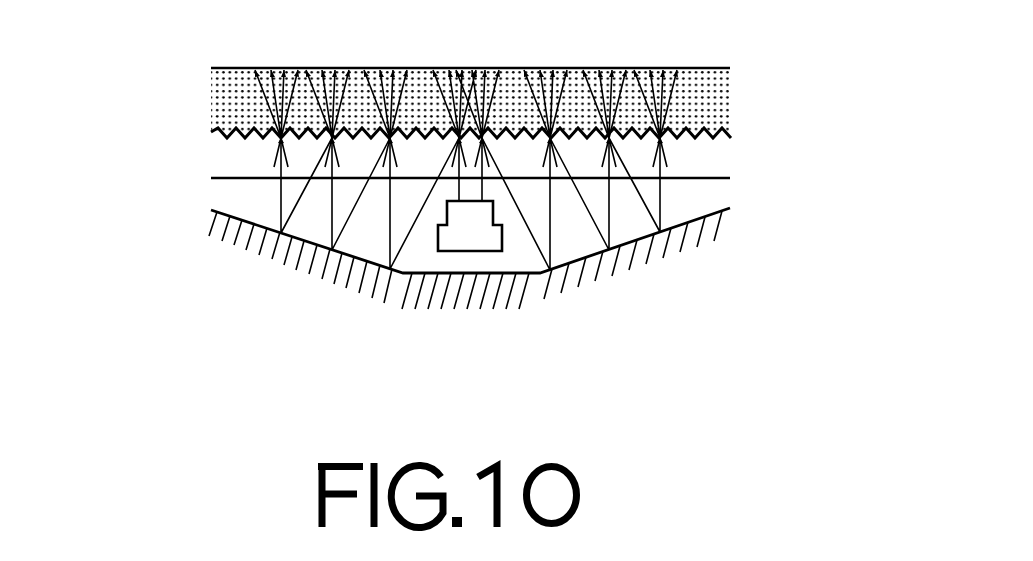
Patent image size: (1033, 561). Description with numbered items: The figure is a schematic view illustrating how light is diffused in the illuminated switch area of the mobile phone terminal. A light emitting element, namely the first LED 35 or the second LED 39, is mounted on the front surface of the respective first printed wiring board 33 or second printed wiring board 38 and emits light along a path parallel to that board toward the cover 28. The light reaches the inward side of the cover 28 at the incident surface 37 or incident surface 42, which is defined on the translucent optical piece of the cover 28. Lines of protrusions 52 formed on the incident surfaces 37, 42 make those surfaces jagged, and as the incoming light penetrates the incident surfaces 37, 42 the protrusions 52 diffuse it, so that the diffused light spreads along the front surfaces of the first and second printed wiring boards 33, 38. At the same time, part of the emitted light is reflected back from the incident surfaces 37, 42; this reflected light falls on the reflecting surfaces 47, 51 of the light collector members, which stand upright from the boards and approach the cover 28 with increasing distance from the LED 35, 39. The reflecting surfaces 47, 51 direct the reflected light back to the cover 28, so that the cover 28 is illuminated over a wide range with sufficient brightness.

The cover 28 is at (712, 68).
The incident surface 37 is at (378, 113).
The incident surface 42 is at (248, 137).
The protrusions 52 is at (692, 131).
The first printed wiring board 33 is at (377, 184).
The second printed wiring board 38 is at (232, 178).
The reflecting surface 47 is at (554, 230).
The reflecting surface 51 is at (705, 207).
The first light-emitting diode 35 is at (398, 290).
The second light-emitting diode 39 is at (447, 252).